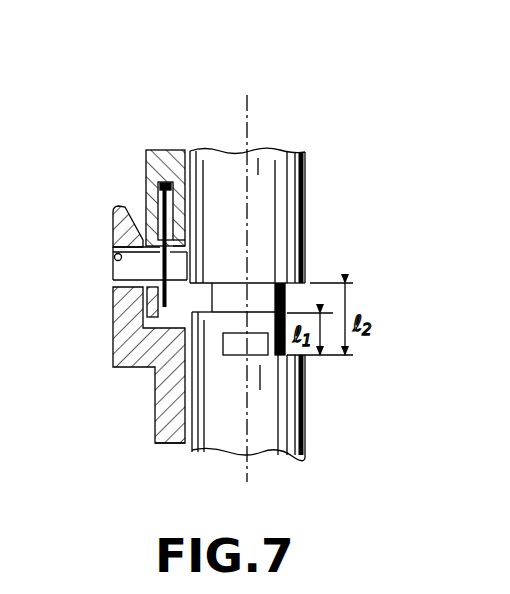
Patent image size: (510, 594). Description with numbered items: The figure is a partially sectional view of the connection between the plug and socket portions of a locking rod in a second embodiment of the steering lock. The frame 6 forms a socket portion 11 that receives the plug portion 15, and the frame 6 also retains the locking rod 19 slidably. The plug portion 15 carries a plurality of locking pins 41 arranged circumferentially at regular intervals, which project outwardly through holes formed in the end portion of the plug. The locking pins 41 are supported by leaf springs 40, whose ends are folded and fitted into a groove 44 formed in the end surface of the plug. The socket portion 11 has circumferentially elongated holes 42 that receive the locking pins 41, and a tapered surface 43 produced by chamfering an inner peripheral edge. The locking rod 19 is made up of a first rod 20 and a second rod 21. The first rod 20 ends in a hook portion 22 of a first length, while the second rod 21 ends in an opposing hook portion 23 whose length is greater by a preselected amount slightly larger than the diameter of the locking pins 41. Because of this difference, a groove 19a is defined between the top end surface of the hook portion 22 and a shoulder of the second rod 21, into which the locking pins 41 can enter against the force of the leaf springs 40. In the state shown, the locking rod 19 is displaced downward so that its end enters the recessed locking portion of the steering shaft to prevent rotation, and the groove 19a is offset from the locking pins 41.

The frame 6 is at (156, 410).
The socket portion 11 is at (112, 348).
The plug portion 15 is at (143, 172).
The locking rod 19 is at (312, 245).
The groove 19a is at (200, 297).
The first rod 20 is at (283, 428).
The second rod 21 is at (292, 185).
The hook portion 22 is at (262, 316).
The hook portion 23 is at (255, 348).
The leaf springs 40 is at (186, 243).
The locking pins 41 is at (180, 263).
The holes 42 is at (115, 256).
The tapered surface 43 is at (125, 208).
The groove 44 is at (162, 180).